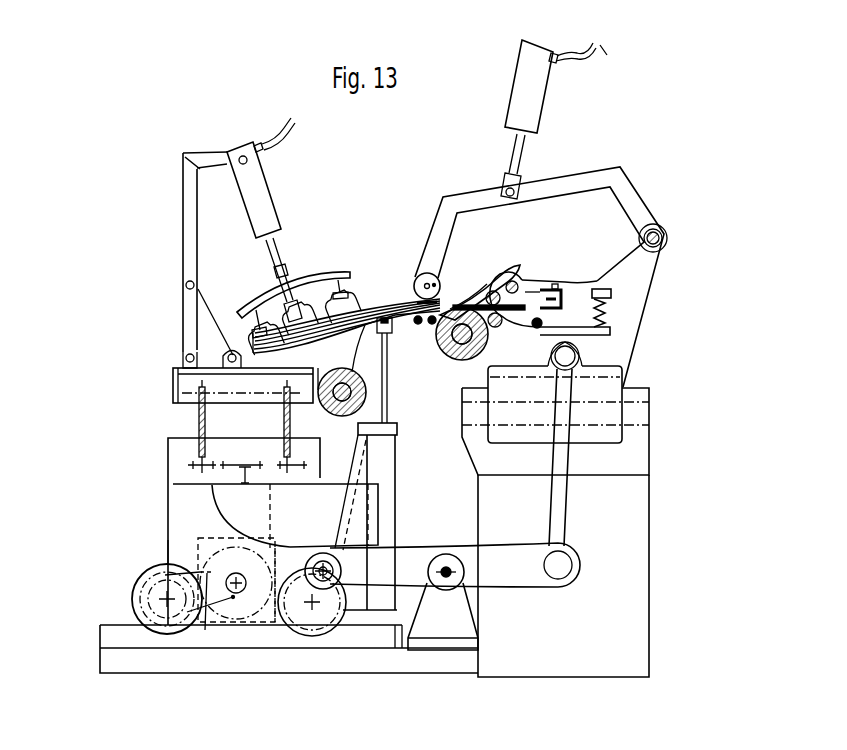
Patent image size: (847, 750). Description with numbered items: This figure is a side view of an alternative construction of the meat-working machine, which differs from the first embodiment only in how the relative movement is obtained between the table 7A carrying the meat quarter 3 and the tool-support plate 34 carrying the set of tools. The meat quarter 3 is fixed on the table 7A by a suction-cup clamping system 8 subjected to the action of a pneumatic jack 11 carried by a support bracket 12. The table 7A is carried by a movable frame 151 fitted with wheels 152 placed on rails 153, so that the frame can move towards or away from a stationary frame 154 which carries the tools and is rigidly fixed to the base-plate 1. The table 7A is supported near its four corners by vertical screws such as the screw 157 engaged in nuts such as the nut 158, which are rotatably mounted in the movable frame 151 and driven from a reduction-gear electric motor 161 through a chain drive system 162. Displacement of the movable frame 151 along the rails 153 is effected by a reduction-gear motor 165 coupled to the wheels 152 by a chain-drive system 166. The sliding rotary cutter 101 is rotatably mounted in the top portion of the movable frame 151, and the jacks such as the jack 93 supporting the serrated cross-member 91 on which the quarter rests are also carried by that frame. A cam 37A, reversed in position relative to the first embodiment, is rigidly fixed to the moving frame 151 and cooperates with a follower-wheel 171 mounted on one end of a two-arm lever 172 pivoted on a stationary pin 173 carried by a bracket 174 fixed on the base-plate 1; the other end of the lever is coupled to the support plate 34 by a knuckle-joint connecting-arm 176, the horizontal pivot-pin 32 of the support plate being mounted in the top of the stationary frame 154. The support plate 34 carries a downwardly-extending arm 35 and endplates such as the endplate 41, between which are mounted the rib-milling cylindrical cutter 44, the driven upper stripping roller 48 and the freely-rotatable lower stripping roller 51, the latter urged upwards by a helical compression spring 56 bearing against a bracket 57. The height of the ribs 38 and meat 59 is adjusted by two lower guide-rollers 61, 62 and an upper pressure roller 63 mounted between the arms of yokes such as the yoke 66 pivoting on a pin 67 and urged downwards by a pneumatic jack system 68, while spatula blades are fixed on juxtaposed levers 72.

The base-plate 1 is at (115, 660).
The meat quarter 3 is at (375, 297).
The table 7A is at (175, 369).
The suction-cup clamping system 8 is at (255, 287).
The pneumatic jack 11 is at (253, 187).
The support bracket 12 is at (190, 195).
The horizontal shaft 32 is at (636, 407).
The tool-support plate 34 is at (609, 375).
The downwardly-extending arm 35 is at (637, 445).
The cam 37A is at (292, 518).
The ribs 38 is at (384, 317).
The endplate 41 is at (576, 290).
The rib-milling cylindrical cutter 44 is at (459, 354).
The upper stripping roller 48 is at (502, 276).
The lower stripping roller 51 is at (490, 328).
The helical compression spring 56 is at (612, 300).
The bracket 57 is at (614, 292).
The meat 59 is at (368, 312).
The lower guide-roller 61 is at (417, 325).
The lower guide-roller 62 is at (430, 328).
The upper pressure roller 63 is at (440, 278).
The yoke 66 is at (622, 190).
The pin 67 is at (656, 238).
The pneumatic jack system 68 is at (530, 85).
The lever 72 is at (538, 292).
The cross-member 91 is at (396, 302).
The jack 93 is at (383, 592).
The sliding rotary cutter 101 is at (313, 380).
The movable frame 151 is at (183, 500).
The wheels 152 is at (148, 571).
The rails 153 is at (107, 630).
The stationary frame 154 is at (634, 567).
The vertical screw 157 is at (198, 421).
The nut 158 is at (186, 465).
The reduction-gear electric motor 161 is at (228, 528).
The chain drive system 162 is at (223, 463).
The reduction-gear motor 165 is at (247, 600).
The chain-drive system 166 is at (207, 573).
The follower-wheel 171 is at (323, 574).
The two-arm lever 172 is at (520, 562).
The stationary pin 173 is at (447, 575).
The bracket 174 is at (437, 603).
The knuckle-joint connecting-arm 176 is at (562, 523).